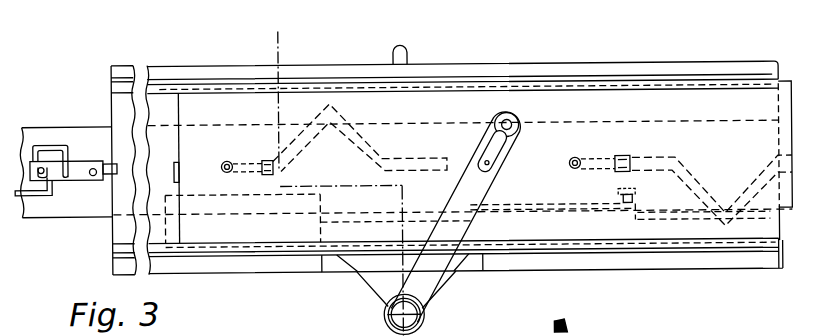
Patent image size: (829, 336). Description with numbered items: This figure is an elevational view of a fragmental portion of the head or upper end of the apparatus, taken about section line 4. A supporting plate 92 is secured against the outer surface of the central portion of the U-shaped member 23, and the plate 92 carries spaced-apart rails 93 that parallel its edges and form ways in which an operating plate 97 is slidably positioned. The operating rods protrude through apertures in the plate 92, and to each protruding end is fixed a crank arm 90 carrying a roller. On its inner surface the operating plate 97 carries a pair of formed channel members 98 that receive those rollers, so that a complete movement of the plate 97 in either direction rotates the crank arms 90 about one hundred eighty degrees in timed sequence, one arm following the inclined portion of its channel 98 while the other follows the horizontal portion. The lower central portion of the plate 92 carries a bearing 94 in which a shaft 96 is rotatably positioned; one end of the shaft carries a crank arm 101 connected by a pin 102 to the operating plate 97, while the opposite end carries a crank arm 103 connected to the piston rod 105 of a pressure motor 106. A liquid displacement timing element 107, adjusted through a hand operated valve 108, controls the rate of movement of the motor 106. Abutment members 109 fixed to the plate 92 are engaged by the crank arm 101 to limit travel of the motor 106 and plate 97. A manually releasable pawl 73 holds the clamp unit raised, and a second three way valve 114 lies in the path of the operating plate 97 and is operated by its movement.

The section line 4- 4 is at (275, 89).
The U-shaped member 23 is at (56, 124).
The manually releasable pawl 73 is at (410, 53).
The crank arm 90 is at (233, 162).
The supporting plate 92 is at (118, 67).
The rails 93 is at (118, 82).
The bearing 94 is at (382, 313).
The shaft 96 is at (420, 314).
The operating plate 97 is at (633, 103).
The channel members 98 is at (384, 157).
The crank arm 101 is at (486, 183).
The pin 102 is at (513, 121).
The crank arm 103 is at (487, 197).
The piston rod 105 is at (385, 222).
The pressure motor 106 is at (192, 193).
The liquid displacement timing element 107 is at (566, 205).
The hand operated valve 108 is at (634, 193).
The abutment members 109 is at (340, 268).
The second three way valve 114 is at (78, 160).